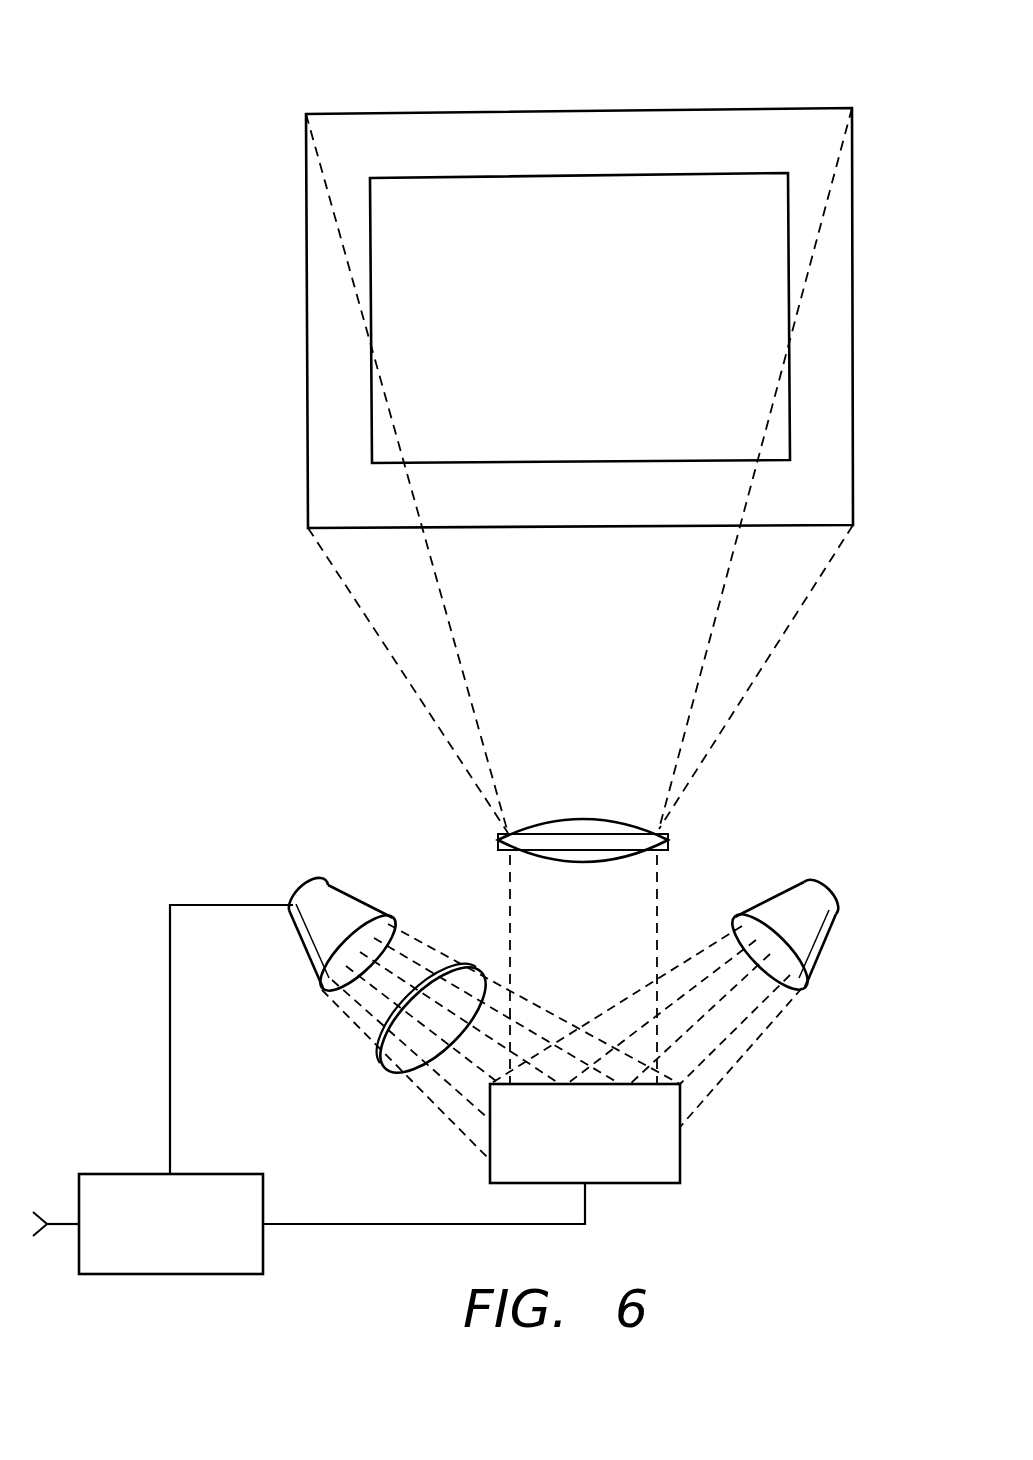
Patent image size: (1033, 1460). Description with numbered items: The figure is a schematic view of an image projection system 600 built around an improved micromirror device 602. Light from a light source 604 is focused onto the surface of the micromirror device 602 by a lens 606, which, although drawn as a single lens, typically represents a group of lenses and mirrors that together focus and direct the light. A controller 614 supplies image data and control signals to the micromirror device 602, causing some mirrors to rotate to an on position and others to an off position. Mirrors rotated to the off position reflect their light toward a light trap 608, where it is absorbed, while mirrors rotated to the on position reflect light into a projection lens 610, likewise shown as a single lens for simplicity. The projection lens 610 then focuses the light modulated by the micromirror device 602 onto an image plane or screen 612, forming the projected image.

The image projection system 600 is at (660, 80).
The micromirror device 602 is at (612, 1147).
The light source 604 is at (347, 908).
The lens 606 is at (383, 1060).
The light trap 608 is at (815, 900).
The projection lens 610 is at (668, 840).
The screen 612 is at (388, 112).
The controller 614 is at (110, 1172).